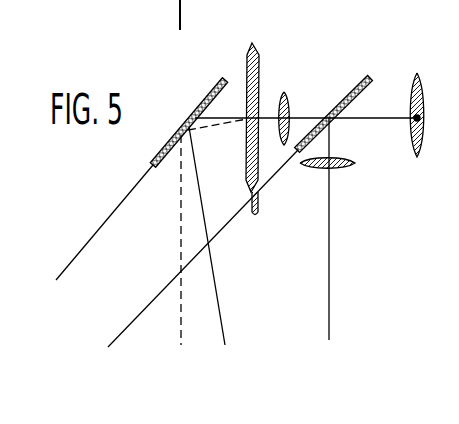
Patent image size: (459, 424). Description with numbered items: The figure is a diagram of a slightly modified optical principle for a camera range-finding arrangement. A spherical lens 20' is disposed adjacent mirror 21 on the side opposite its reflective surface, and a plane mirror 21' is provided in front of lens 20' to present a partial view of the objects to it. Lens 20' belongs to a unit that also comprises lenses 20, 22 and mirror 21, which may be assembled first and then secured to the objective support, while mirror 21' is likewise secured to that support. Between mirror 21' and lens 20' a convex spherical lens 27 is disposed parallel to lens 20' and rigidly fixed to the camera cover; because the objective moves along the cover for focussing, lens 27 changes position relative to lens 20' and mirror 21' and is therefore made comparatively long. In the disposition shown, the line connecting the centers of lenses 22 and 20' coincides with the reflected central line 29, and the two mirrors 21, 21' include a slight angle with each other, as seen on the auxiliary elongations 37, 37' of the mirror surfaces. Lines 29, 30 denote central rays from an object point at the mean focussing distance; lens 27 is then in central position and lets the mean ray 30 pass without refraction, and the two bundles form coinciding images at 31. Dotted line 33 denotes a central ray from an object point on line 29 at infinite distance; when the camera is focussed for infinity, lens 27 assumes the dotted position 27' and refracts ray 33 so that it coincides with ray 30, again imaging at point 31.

The lens 20 is at (332, 182).
The spherical lens 20' is at (298, 107).
The mirror 21 is at (334, 101).
The plane mirror 21' is at (188, 117).
The lens 22 is at (424, 84).
The lens 27 is at (264, 113).
The dotted position of lens 27' is at (270, 214).
The reflected central line 29 is at (388, 117).
The mean ray 30 is at (213, 120).
The image point 31 is at (419, 121).
The central ray 33 is at (215, 124).
The auxiliary elongation of mirror surface 37 is at (203, 248).
The auxiliary elongation of mirror surface 37' is at (104, 222).